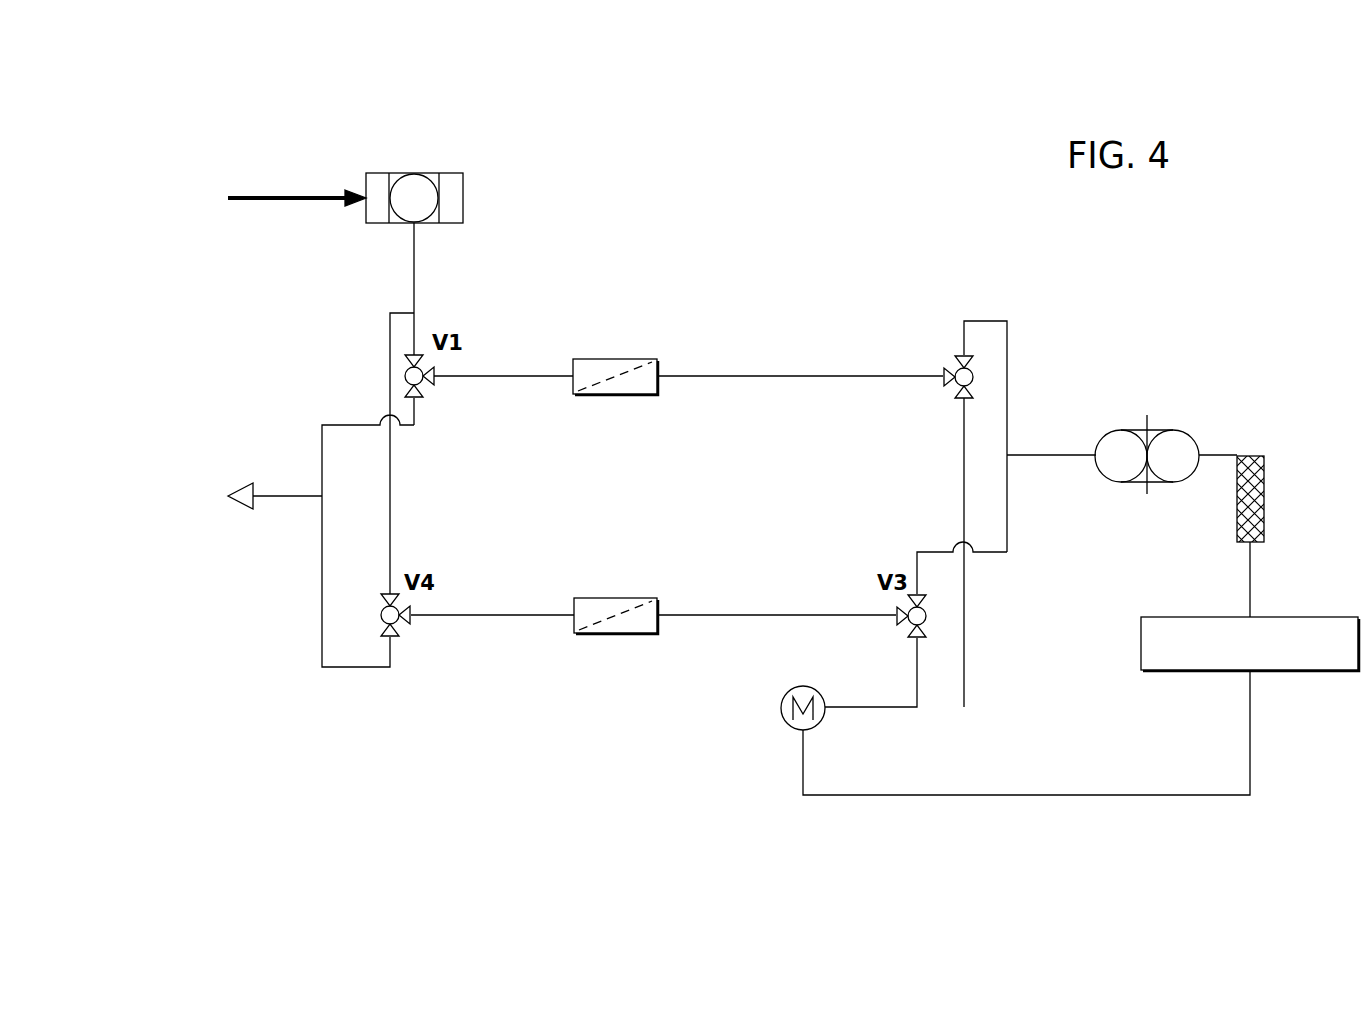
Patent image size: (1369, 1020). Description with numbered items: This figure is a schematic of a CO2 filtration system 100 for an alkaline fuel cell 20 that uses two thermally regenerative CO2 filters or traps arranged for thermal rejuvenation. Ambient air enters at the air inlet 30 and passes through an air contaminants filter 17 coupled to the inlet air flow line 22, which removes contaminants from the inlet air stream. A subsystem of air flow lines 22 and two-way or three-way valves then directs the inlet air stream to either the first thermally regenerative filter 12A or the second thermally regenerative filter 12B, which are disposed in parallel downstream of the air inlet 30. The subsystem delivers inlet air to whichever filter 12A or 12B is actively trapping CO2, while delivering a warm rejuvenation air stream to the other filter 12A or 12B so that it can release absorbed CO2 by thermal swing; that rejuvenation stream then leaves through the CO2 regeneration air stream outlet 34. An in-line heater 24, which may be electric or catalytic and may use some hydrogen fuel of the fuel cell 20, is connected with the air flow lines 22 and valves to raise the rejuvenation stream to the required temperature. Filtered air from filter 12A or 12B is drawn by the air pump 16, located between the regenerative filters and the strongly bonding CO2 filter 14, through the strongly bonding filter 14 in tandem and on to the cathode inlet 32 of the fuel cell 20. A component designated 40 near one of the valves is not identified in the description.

The CO2 filtration system 100 is at (244, 122).
The air inlet 30 is at (180, 226).
The air contaminants filter 17 is at (463, 199).
The air flow lines 22 is at (414, 272).
The first thermally regenerative filter 12A is at (643, 394).
The second thermally regenerative filter 12B is at (643, 633).
The valve assembly 40 is at (888, 370).
The air pump 16 is at (1173, 431).
The strongly bonding CO2 filter 14 is at (1265, 465).
The cathode inlet 32 is at (1263, 614).
The alkaline fuel cell 20 is at (1299, 672).
The in-line heater 24 is at (781, 707).
The CO2 regeneration air stream outlet 34 is at (287, 497).